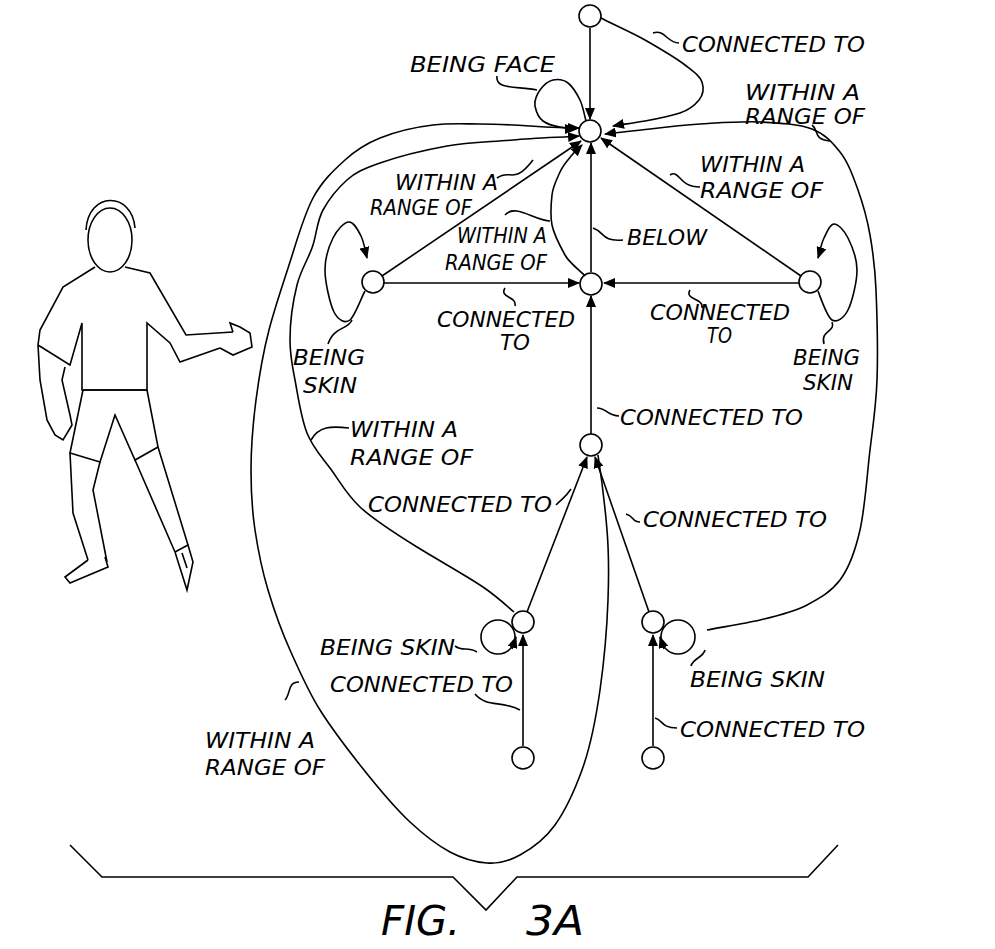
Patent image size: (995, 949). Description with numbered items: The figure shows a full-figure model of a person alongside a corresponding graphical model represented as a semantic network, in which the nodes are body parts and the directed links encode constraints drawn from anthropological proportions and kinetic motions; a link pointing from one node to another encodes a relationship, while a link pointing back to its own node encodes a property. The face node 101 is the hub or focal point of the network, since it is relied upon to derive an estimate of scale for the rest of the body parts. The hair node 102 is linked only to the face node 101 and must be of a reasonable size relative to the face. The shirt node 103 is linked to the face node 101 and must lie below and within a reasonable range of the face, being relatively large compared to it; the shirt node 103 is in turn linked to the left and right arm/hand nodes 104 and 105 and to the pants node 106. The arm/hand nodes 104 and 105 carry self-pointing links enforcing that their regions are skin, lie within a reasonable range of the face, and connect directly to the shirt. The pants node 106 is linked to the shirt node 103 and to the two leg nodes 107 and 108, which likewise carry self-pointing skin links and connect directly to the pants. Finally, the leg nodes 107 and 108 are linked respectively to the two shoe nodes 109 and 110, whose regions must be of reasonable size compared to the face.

The face node 101 is at (596, 143).
The hair node 102 is at (598, 30).
The shirt node 103 is at (600, 296).
The left arm/hand node 104 is at (385, 291).
The right arm/hand node 105 is at (798, 280).
The pants node 106 is at (603, 446).
The leg node 107 is at (534, 628).
The leg node 108 is at (649, 630).
The shoe node 109 is at (513, 768).
The shoe node 110 is at (660, 768).